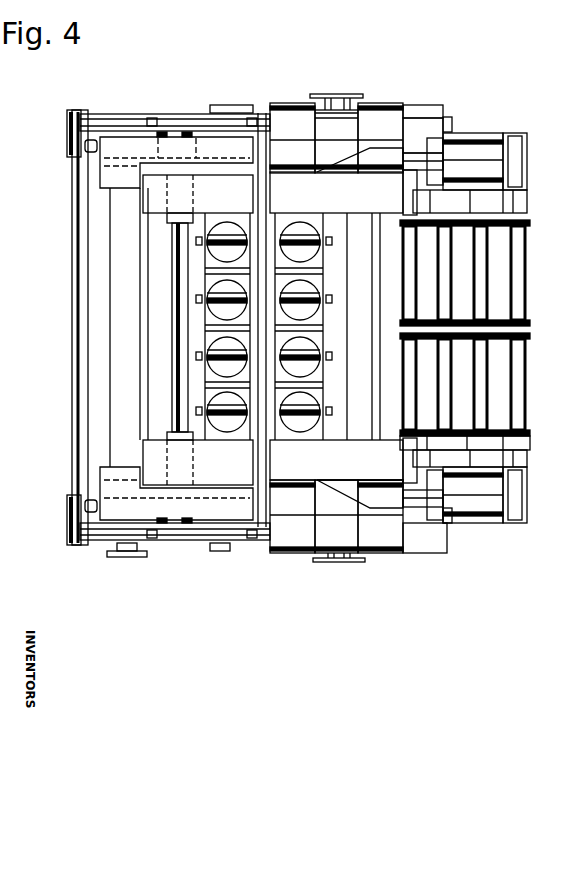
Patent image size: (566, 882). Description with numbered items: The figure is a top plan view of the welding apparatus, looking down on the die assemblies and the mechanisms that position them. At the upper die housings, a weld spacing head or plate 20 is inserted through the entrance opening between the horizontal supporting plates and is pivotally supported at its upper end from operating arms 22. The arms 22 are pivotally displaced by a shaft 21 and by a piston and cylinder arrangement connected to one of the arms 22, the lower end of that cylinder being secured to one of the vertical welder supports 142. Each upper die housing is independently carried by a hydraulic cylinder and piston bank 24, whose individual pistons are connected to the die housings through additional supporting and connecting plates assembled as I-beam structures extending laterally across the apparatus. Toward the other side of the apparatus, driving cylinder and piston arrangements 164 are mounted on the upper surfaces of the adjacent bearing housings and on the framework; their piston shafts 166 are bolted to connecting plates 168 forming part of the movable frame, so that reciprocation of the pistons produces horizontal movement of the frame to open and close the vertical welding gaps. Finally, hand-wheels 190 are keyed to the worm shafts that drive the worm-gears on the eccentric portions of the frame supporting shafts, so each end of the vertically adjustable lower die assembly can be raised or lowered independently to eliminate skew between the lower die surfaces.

The weld spacing head 20 is at (262, 240).
The shaft 21 is at (73, 347).
The operating arms 22 is at (148, 114).
The hydraulic cylinder and piston bank 24 is at (222, 233).
The vertical welder support 142 is at (128, 153).
The driving cylinder and piston arrangement 164 is at (475, 150).
The piston shaft 166 is at (422, 150).
The connecting plate 168 is at (403, 105).
The hand-wheel 190 is at (348, 95).